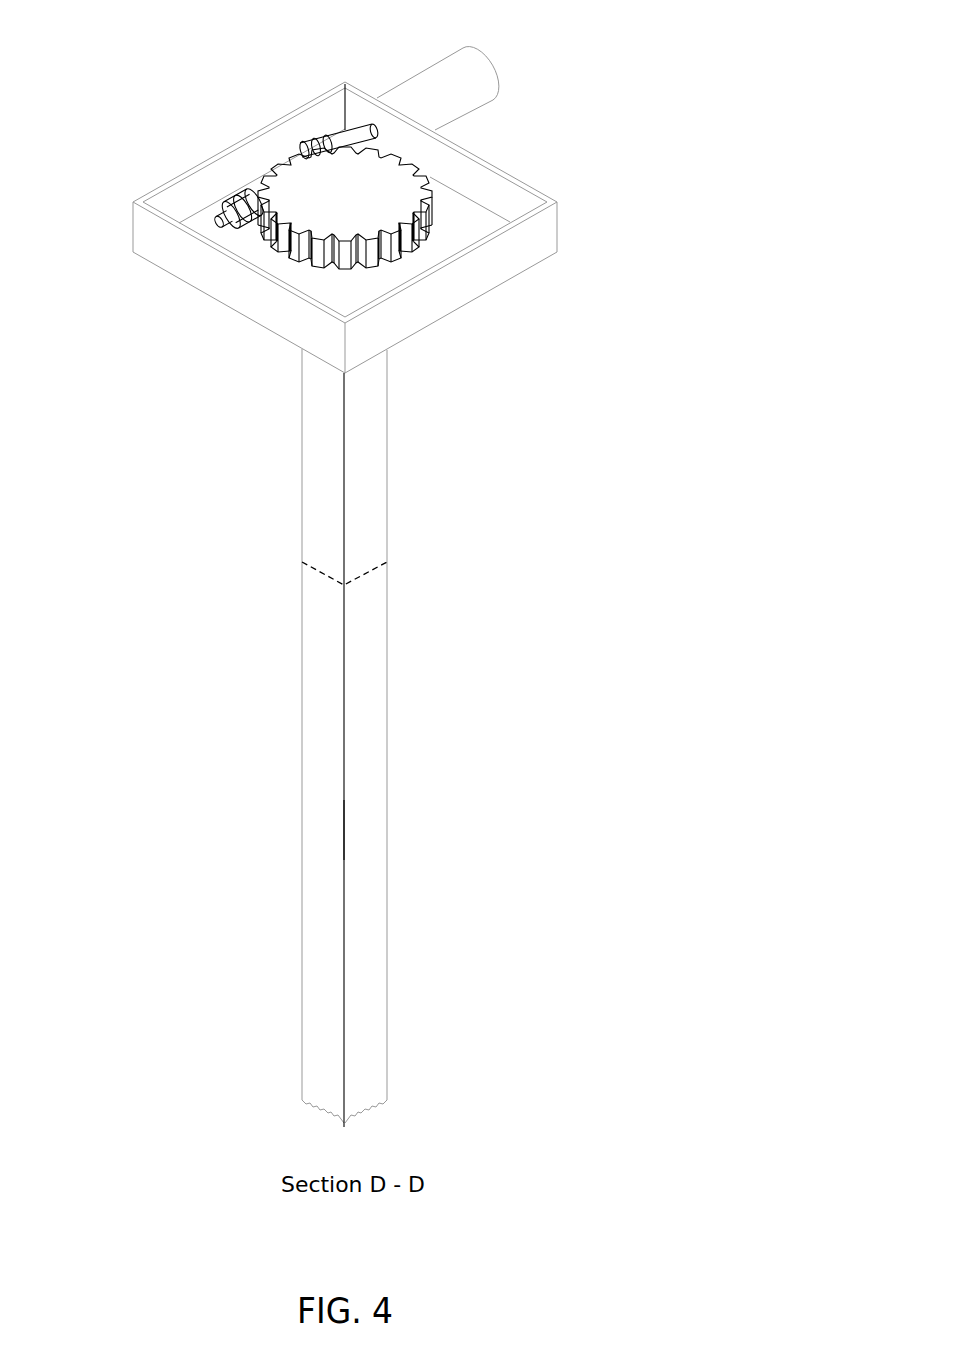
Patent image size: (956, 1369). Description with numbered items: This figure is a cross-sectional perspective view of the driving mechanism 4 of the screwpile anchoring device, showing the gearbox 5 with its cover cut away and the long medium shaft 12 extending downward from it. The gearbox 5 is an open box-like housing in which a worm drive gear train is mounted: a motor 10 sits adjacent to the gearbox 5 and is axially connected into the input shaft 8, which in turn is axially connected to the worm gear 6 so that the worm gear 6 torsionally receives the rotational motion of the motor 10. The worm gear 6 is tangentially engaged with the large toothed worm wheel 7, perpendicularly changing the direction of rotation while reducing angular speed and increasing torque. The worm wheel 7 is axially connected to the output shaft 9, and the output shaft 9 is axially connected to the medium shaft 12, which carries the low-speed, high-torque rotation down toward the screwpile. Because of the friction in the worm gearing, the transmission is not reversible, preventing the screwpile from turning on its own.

The driving mechanism 4 is at (693, 241).
The gearbox 5 is at (103, 217).
The worm gear 6 is at (253, 181).
The worm wheel 7 is at (354, 209).
The input shaft 8 is at (377, 131).
The output shaft 9 is at (307, 430).
The motor 10 is at (467, 62).
The medium shaft 12 is at (377, 808).